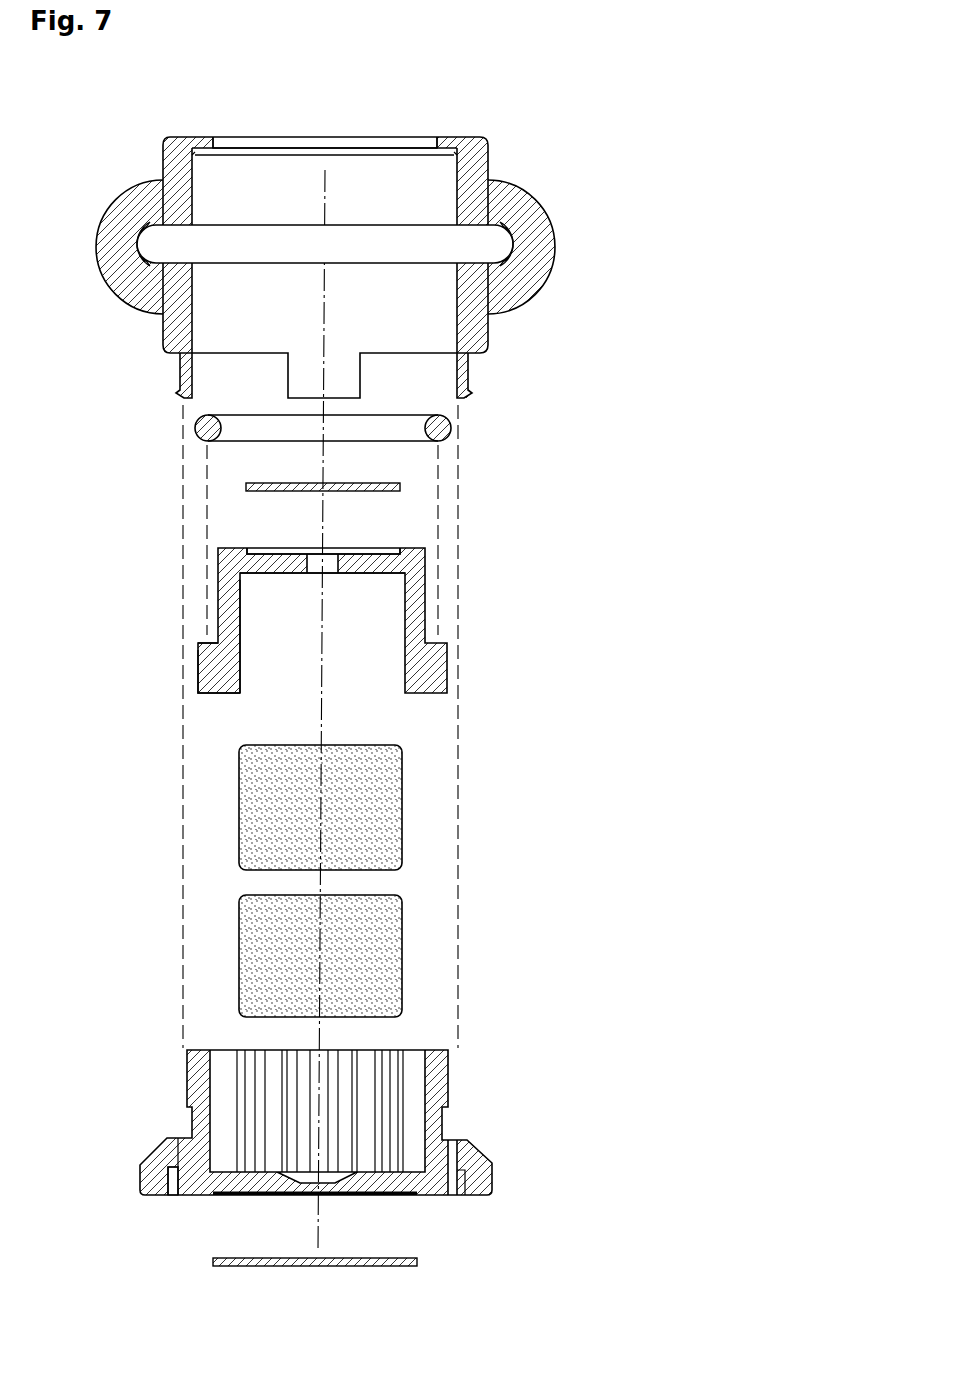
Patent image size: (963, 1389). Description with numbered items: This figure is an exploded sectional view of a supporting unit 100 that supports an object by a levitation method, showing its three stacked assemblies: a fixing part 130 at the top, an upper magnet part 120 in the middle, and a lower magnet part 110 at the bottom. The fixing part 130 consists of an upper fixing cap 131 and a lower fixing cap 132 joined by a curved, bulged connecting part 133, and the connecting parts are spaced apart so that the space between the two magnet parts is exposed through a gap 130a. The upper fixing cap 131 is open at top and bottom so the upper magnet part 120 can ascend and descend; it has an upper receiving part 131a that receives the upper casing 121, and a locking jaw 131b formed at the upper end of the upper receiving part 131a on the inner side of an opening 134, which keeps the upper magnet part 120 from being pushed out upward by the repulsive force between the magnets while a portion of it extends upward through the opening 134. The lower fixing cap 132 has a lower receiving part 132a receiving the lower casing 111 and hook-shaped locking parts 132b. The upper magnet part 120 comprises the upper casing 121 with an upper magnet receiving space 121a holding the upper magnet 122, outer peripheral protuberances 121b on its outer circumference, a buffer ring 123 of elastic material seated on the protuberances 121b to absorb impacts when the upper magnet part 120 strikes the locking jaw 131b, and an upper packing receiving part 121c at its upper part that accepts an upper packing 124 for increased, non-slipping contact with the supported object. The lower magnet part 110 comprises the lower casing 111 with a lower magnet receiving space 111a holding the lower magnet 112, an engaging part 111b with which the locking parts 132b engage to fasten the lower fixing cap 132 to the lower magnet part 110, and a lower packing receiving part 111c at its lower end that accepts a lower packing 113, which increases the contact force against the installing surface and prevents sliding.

The supporting unit 100 is at (670, 160).
The fixing part 130 is at (365, 235).
The gap 130a is at (343, 245).
The upper fixing cap 131 is at (472, 167).
The upper receiving part 131a is at (248, 197).
The locking jaw 131b is at (207, 148).
The lower fixing cap 132 is at (477, 332).
The lower receiving part 132a is at (236, 306).
The locking part 132b is at (183, 372).
The connecting part 133 is at (537, 260).
The opening 134 is at (300, 146).
The upper magnet part 120 is at (372, 642).
The upper casing 121 is at (334, 600).
The upper magnet receiving space 121a is at (277, 603).
The outer peripheral protuberances 121b is at (210, 670).
The upper packing receiving part 121c is at (260, 552).
The upper magnet 122 is at (420, 787).
The buffer ring 123 is at (450, 427).
The upper packing 124 is at (400, 485).
The lower magnet part 110 is at (348, 1080).
The lower casing 111 is at (313, 1147).
The lower magnet receiving space 111a is at (262, 1092).
The engaging part 111b is at (182, 1172).
The lower packing receiving part 111c is at (250, 1195).
The lower magnet 112 is at (382, 958).
The lower packing 113 is at (404, 1233).